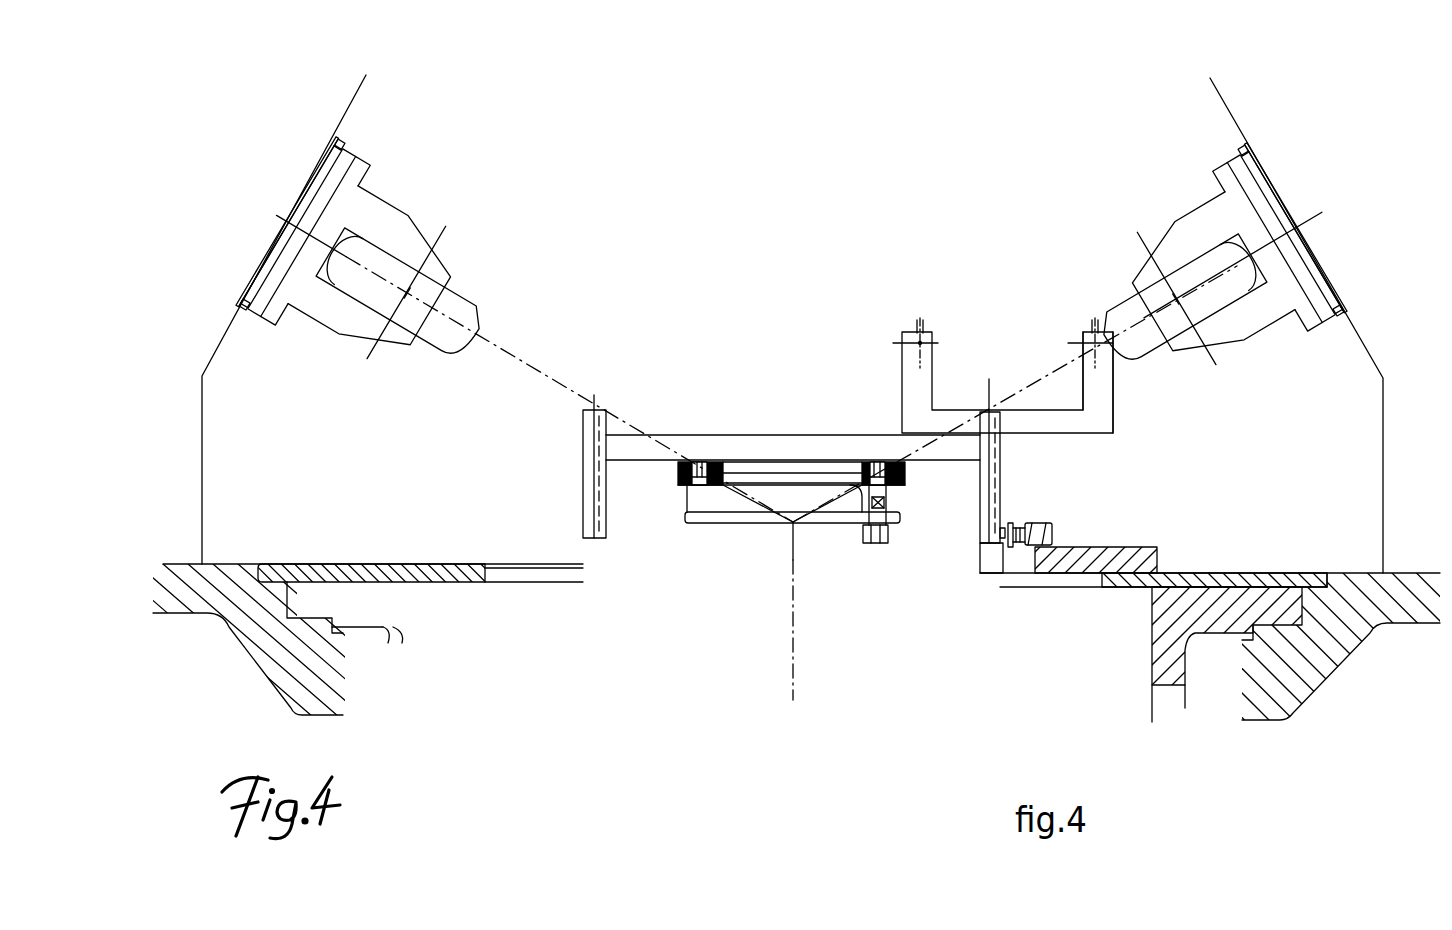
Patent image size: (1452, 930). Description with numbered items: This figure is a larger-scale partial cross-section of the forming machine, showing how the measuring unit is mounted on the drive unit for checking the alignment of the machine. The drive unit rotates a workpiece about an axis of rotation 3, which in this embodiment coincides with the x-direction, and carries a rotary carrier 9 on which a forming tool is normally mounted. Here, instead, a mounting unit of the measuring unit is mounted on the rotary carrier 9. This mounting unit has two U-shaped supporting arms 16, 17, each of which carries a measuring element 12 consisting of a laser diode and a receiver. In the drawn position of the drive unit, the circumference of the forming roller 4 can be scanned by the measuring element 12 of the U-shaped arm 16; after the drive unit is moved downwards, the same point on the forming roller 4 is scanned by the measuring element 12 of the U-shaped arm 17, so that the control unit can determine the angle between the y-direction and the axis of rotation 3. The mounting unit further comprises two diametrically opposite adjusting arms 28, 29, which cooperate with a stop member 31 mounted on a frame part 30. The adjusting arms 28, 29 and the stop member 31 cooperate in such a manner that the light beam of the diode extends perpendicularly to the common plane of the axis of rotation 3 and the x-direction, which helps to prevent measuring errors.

The axis of rotation 3 is at (790, 620).
The forming roller 4 is at (460, 307).
The rotary carrier 9 is at (707, 497).
The measuring element 12 is at (923, 335).
The U-shaped supporting arm 16 is at (1088, 377).
The U-shaped supporting arm 17 is at (910, 410).
The adjusting arm 28 is at (975, 520).
The adjusting arm 29 is at (597, 540).
The frame part 30 is at (1126, 560).
The stop member 31 is at (1030, 555).